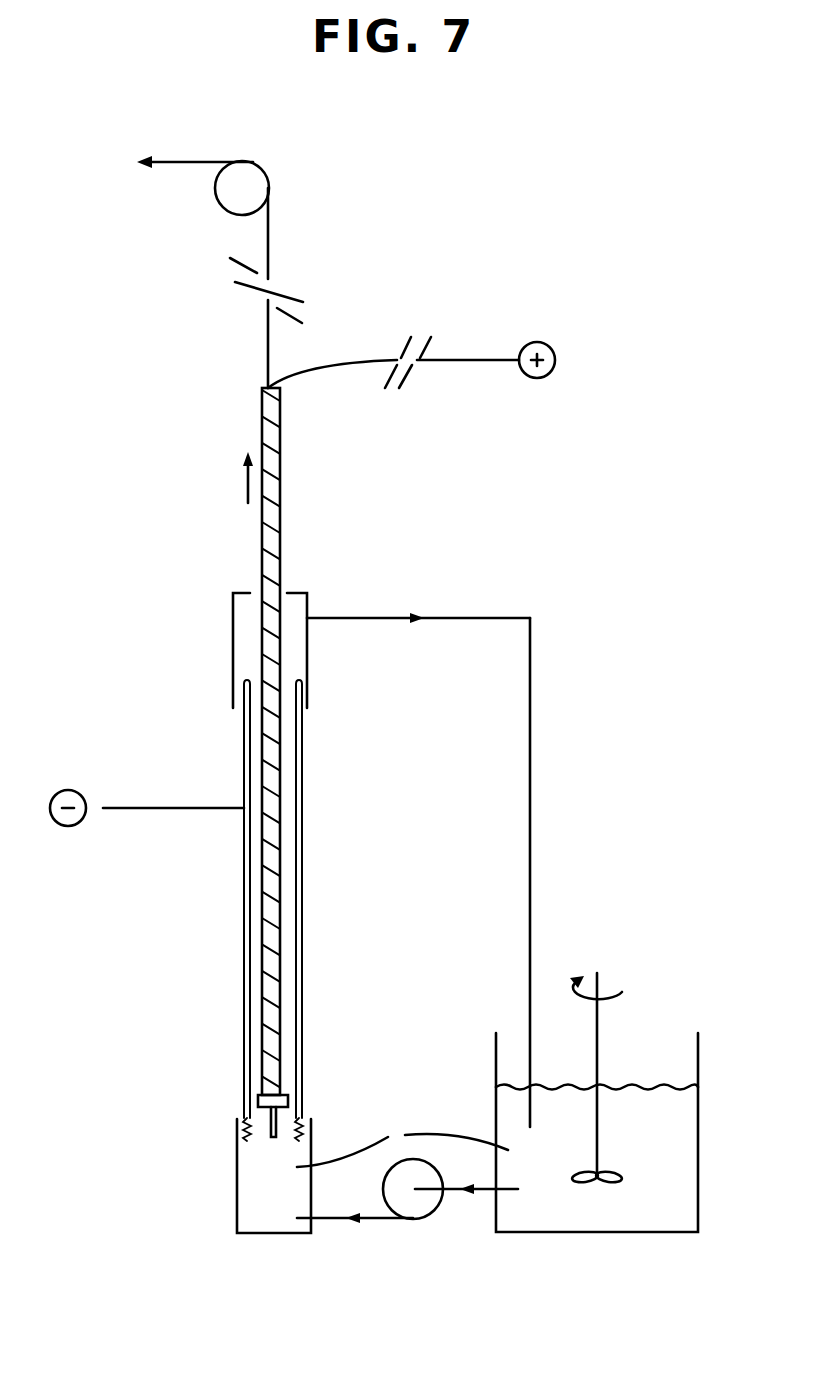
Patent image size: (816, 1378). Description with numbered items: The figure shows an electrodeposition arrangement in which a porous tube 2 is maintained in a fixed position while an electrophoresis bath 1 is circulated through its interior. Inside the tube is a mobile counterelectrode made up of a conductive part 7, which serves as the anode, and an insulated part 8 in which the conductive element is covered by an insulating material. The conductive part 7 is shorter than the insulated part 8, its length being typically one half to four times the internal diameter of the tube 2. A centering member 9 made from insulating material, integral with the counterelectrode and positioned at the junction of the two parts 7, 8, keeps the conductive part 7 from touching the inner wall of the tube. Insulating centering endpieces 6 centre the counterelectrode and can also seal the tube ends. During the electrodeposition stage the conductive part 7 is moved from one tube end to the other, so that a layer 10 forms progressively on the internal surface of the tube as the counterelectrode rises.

The electrophoresis bath 1 is at (402, 1143).
The porous tube 2 is at (302, 776).
The insulating centering endpiece 6 is at (233, 645).
The conductive part 7 is at (270, 1135).
The insulated part 8 is at (268, 753).
The centering member 9 is at (254, 1097).
The layer 10 is at (300, 1120).